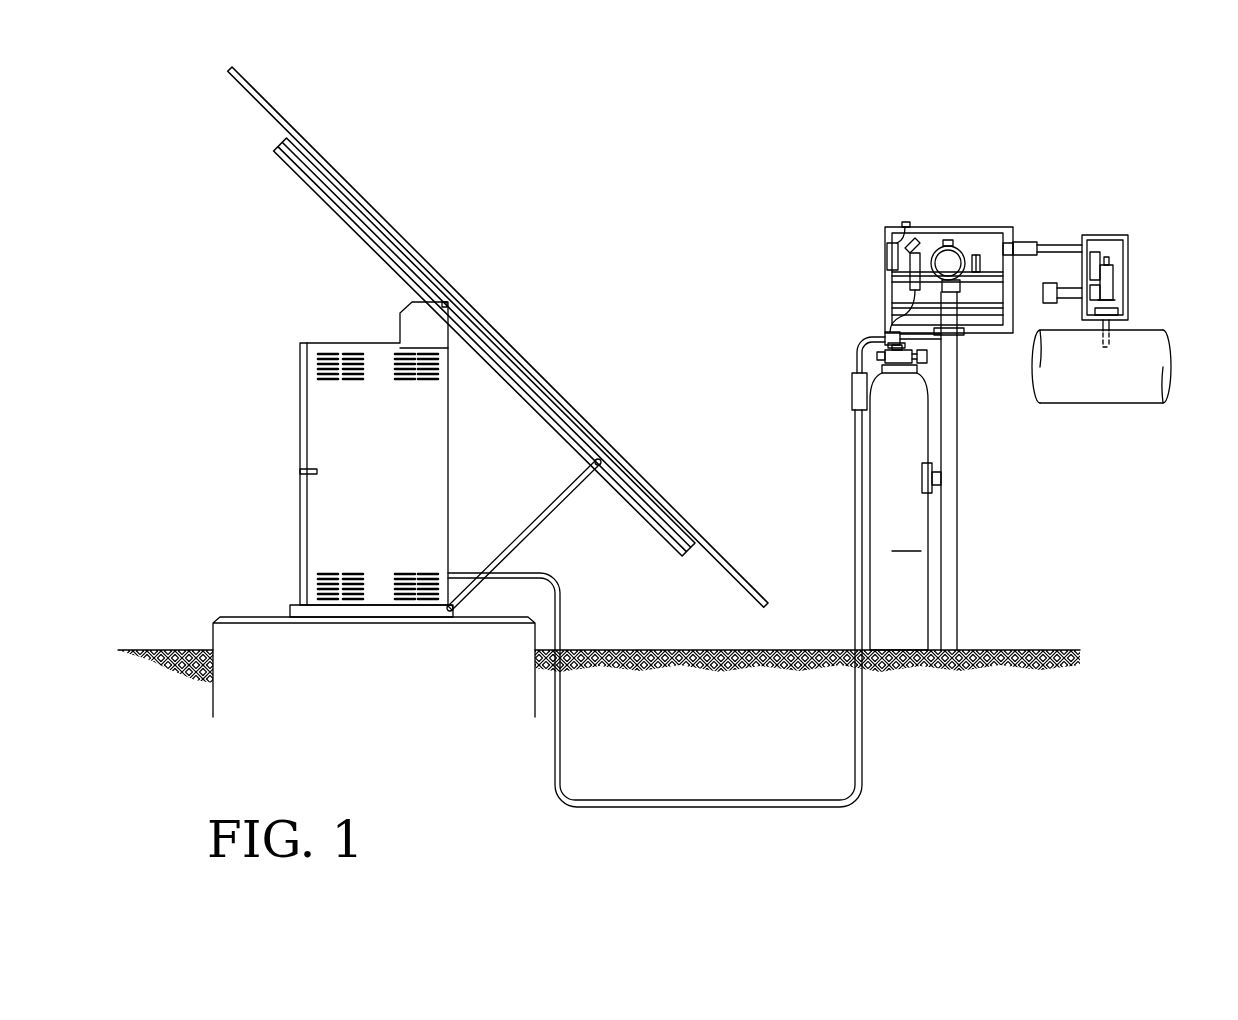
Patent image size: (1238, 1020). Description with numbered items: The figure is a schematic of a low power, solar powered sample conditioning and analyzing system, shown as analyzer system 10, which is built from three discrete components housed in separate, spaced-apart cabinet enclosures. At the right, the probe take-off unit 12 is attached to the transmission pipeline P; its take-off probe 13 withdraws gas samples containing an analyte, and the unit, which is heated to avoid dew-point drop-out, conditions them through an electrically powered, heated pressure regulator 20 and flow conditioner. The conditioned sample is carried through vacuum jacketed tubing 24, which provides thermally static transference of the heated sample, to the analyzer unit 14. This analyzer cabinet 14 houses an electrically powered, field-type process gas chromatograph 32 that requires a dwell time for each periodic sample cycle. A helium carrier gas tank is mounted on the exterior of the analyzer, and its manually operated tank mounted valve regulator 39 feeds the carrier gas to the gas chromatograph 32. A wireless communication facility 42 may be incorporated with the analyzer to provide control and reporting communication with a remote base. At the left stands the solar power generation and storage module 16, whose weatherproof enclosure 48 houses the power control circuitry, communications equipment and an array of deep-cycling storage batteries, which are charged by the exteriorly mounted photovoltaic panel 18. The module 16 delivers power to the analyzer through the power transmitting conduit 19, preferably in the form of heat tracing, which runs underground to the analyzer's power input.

The analyzer system 10 is at (678, 262).
The probe take-off unit 12 is at (1128, 255).
The take-off probe 13 is at (1106, 330).
The analyzer unit 14 is at (972, 227).
The solar power generation and storage module 16 is at (300, 518).
The photovoltaic panel 18 is at (298, 175).
The power transmitting conduit 19 is at (883, 330).
The heated pressure regulator 20 is at (1106, 257).
The vacuum jacketed tubing 24 is at (1030, 242).
The process gas chromatograph 32 is at (937, 251).
The tank mounted valve regulator 39 is at (867, 340).
The wireless communication facility 42 is at (905, 222).
The weatherproof enclosure 48 is at (407, 486).
The transmission pipeline P is at (1138, 403).